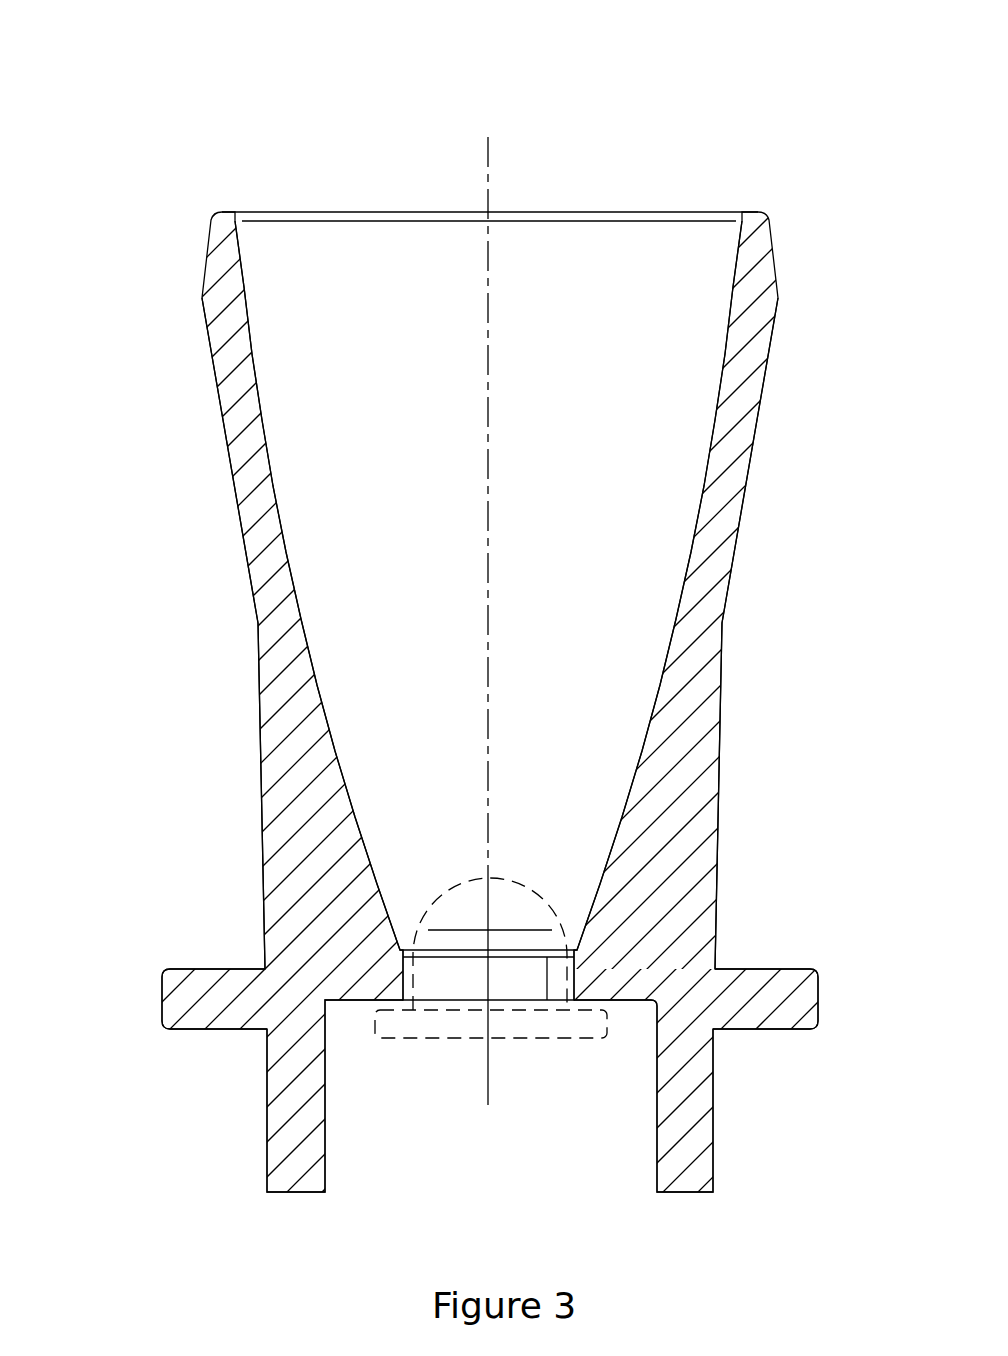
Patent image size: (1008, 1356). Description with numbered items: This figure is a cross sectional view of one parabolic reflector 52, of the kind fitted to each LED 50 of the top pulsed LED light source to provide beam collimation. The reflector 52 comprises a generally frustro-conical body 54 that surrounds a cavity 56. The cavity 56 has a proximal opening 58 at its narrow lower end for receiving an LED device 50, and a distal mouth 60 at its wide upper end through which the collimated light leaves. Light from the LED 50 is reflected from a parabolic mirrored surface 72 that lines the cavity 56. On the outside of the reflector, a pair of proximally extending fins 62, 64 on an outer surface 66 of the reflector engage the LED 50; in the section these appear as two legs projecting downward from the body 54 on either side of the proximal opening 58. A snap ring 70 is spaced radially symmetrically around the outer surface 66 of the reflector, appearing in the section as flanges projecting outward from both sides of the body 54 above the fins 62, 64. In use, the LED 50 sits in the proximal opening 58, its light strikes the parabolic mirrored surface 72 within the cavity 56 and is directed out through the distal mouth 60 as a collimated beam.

The parabolic reflector 52 is at (150, 186).
The frustro-conical body 54 is at (238, 420).
The cavity 56 is at (558, 285).
The proximal opening 58 is at (402, 978).
The distal mouth 60 is at (607, 208).
The proximally extending fin 62 is at (715, 1107).
The proximally extending fin 64 is at (268, 1092).
The outer surface 66 is at (757, 430).
The snap ring 70 is at (160, 975).
The parabolic mirrored surface 72 is at (703, 476).
The LED 50 is at (458, 883).